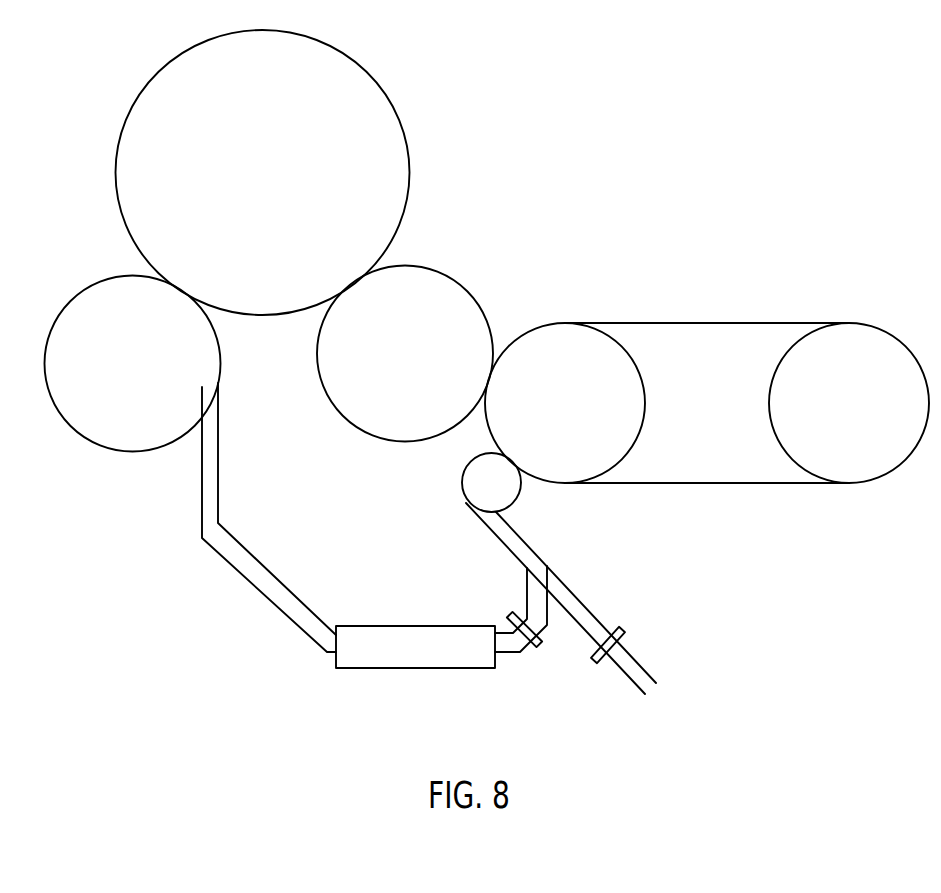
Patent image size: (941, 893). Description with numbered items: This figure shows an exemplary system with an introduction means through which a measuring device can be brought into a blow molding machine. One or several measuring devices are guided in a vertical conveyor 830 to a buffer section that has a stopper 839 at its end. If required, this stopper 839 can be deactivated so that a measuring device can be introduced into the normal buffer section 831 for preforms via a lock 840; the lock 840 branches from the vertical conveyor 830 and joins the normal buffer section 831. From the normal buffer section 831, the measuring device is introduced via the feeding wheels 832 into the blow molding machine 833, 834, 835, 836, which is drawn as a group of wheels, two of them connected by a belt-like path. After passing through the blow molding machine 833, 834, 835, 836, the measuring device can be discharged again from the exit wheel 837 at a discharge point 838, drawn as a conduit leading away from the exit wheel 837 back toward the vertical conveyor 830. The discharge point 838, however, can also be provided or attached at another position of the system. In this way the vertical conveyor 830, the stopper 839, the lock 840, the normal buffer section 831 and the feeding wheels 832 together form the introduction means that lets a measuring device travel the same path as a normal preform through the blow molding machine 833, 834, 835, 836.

The vertical conveyor 830 is at (377, 632).
The normal buffer section 831 is at (597, 612).
The feeding wheels 832 is at (491, 482).
The blow molding machine 833 is at (667, 403).
The blow molding machine 834 is at (849, 403).
The blow molding machine 835 is at (405, 354).
The blow molding machine 836 is at (263, 172).
The exit wheel 837 is at (133, 364).
The discharge point 838 is at (219, 385).
The stopper 839 is at (538, 646).
The lock 840 is at (548, 563).